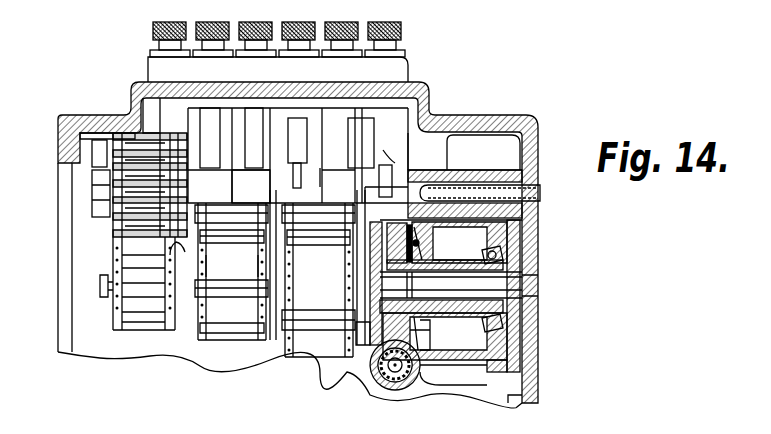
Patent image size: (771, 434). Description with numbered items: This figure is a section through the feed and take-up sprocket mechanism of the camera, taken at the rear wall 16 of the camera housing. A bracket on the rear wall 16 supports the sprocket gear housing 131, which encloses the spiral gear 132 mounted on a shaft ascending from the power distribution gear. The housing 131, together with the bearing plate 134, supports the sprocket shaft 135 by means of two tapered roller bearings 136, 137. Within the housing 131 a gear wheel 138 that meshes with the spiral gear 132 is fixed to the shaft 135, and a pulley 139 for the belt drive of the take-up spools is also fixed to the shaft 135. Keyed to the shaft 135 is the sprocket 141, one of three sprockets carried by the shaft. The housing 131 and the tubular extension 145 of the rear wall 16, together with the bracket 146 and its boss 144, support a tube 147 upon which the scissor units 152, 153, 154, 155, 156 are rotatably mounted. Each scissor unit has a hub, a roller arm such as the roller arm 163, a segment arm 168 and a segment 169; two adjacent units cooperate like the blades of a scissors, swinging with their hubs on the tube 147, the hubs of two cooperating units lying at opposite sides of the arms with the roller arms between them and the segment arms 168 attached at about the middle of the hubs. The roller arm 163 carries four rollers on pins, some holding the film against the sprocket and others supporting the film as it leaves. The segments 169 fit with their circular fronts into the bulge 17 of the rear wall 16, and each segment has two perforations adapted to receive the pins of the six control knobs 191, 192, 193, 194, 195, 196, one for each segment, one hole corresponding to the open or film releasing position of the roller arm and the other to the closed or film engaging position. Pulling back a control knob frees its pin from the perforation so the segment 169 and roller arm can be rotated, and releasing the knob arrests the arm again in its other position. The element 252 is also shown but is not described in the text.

The rear wall 16 is at (170, 78).
The bulge 17 is at (437, 90).
The sprocket gear housing 131 is at (462, 362).
The spiral gear 132 is at (405, 375).
The bearing plate 134 is at (503, 340).
The sprocket shaft 135 is at (533, 275).
The tapered roller bearing 136 is at (507, 257).
The tapered roller bearing 137 is at (372, 333).
The gear wheel 138 is at (390, 327).
The pulley 139 is at (437, 243).
The sprocket 141 is at (135, 310).
The boss 144 is at (97, 190).
The tubular extension 145 is at (465, 151).
The bracket 146 is at (97, 158).
The tube 147 is at (533, 188).
The scissor unit 152 is at (298, 155).
The scissor unit 153 is at (251, 186).
The scissor unit 154 is at (300, 184).
The scissor unit 155 is at (348, 155).
The scissor unit 156 is at (386, 159).
The roller arm 163 is at (478, 429).
The segment arm 168 is at (185, 252).
The segment 169 is at (170, 110).
The control knob 191 is at (158, 40).
The control knob 192 is at (203, 16).
The control knob 193 is at (247, 16).
The control knob 194 is at (290, 16).
The control knob 195 is at (335, 16).
The control knob 196 is at (405, 31).
The bearing 252 is at (443, 330).